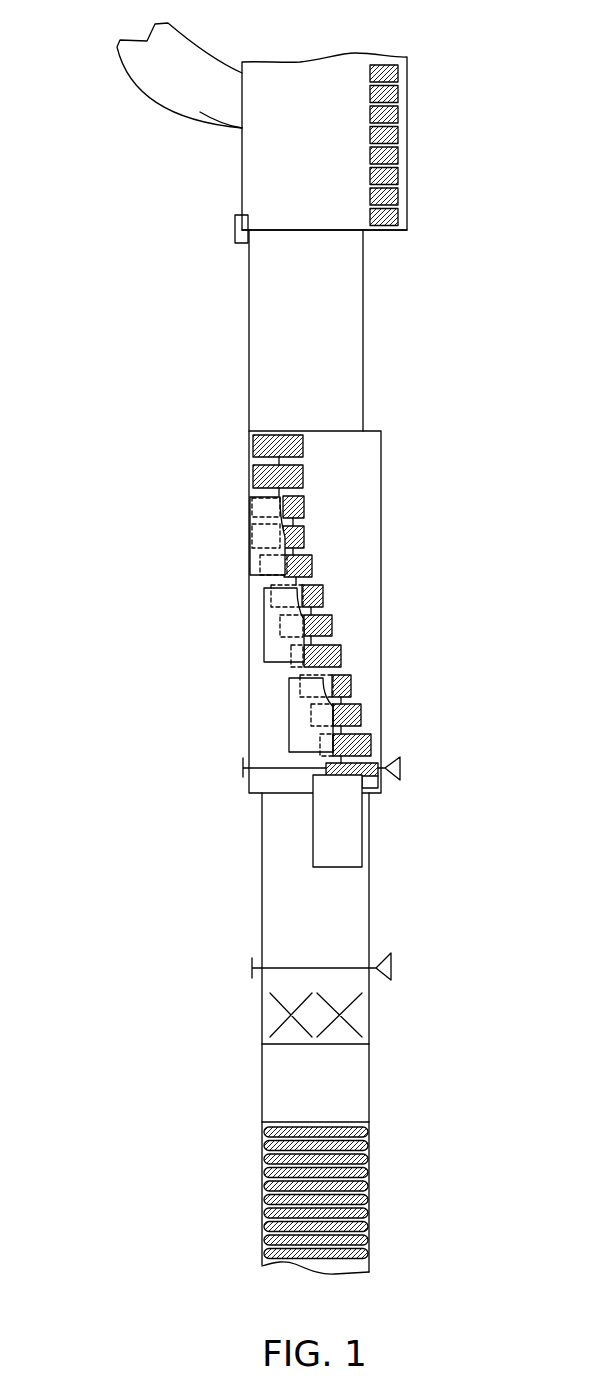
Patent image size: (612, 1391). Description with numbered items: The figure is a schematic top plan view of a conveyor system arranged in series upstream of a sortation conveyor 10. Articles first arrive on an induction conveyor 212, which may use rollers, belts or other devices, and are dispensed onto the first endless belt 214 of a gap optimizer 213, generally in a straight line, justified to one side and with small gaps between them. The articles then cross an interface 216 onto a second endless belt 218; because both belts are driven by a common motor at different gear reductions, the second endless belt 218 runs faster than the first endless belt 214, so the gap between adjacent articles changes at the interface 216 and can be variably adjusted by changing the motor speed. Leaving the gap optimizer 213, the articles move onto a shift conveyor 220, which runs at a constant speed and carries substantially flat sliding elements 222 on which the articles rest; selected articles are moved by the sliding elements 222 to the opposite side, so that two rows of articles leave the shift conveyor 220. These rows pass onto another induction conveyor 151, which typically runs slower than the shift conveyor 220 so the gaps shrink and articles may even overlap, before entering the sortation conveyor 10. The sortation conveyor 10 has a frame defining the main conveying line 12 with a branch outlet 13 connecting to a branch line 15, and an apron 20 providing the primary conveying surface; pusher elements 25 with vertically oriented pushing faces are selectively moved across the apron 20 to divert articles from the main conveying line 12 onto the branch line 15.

The sortation conveyor 10 is at (202, 192).
The main conveying line 12 is at (260, 190).
The branch outlet 13 is at (233, 135).
The branch line 15 is at (138, 90).
The apron 20 is at (303, 100).
The pusher element 25 is at (398, 173).
The induction conveyor 151 is at (230, 345).
The induction conveyor 212 is at (237, 1200).
The gap optimizer 213 is at (200, 975).
The first endless belt 214 is at (237, 1082).
The interface 216 is at (237, 1039).
The second endless belt 218 is at (237, 890).
The shift conveyor 220 is at (217, 617).
The sliding element 222 is at (360, 710).